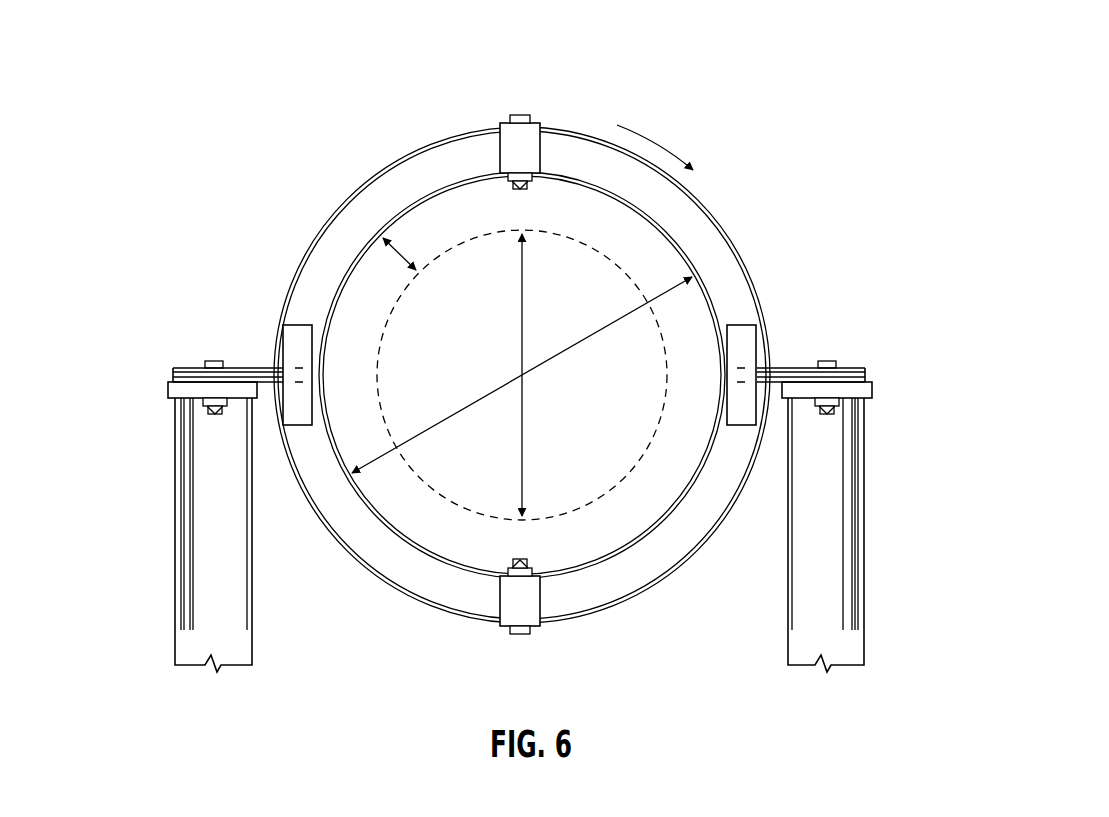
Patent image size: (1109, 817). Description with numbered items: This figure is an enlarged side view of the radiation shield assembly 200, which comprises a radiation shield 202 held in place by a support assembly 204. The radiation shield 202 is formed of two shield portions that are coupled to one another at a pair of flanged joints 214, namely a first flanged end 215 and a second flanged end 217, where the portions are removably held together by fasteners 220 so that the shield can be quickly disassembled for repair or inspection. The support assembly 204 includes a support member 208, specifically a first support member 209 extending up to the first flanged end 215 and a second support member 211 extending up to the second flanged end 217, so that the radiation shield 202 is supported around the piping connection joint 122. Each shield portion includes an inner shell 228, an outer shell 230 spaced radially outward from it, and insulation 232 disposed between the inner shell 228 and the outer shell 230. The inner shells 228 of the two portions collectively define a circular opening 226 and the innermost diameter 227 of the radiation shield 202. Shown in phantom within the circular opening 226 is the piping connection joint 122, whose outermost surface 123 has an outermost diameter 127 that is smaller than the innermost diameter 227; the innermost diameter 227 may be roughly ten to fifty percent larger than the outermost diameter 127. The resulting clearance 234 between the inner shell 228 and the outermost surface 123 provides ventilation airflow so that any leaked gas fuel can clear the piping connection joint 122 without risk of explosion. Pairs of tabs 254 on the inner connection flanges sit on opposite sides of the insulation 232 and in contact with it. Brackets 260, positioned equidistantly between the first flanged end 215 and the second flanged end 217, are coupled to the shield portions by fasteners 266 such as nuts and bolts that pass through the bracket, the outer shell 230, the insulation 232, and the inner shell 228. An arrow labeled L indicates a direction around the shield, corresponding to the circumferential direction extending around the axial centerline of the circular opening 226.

The radiation shield assembly 200 is at (756, 76).
The radiation shield 202 is at (293, 162).
The support assembly 204 is at (900, 530).
The support member 208 is at (527, 535).
The first support member 209 is at (200, 522).
The second support member 211 is at (828, 577).
The flanged joints 214 is at (520, 343).
The first flanged end 215 is at (160, 356).
The second flanged end 217 is at (880, 356).
The fasteners 220 is at (213, 361).
The circular opening 226 is at (374, 339).
The inner shell 228 is at (662, 233).
The outer shell 230 is at (698, 208).
The insulation 232 is at (710, 251).
The clearance 234 is at (400, 253).
The tabs 254 is at (296, 346).
The bracket 260 is at (545, 136).
The fasteners 266 is at (520, 114).
The piping connection joint 122 is at (628, 474).
The outermost surface 123 is at (666, 377).
The outermost diameter 127 is at (524, 444).
The innermost diameter 227 is at (558, 353).
The circumferential direction L is at (660, 142).